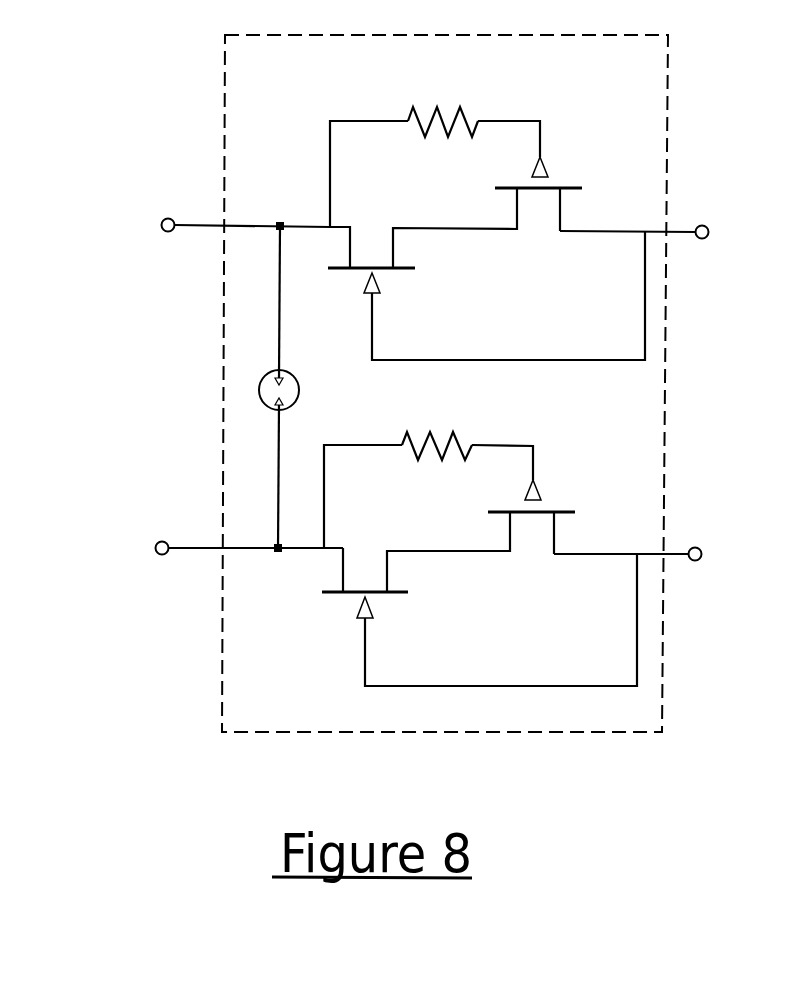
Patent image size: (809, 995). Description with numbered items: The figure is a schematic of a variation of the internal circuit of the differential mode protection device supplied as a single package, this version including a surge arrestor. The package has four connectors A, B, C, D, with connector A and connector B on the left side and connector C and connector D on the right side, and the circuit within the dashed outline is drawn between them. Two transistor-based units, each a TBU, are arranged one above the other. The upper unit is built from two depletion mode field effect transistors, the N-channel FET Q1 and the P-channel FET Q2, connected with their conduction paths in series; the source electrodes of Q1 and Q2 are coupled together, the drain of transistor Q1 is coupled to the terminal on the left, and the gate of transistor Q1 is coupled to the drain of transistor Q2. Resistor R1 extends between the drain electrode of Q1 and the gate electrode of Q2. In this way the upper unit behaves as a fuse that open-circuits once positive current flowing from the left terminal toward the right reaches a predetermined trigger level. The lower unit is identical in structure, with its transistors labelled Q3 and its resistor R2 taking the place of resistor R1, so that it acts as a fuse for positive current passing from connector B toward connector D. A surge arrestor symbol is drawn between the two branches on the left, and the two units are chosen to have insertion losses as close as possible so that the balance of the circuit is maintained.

The connector A is at (216, 225).
The connector B is at (216, 544).
The connector C is at (669, 227).
The connector D is at (663, 550).
The resistor R1 is at (443, 105).
The resistor R2 is at (437, 428).
The N-channel FET Q1 is at (364, 257).
The P-channel FET Q2 is at (541, 177).
The FET Q3 is at (455, 549).